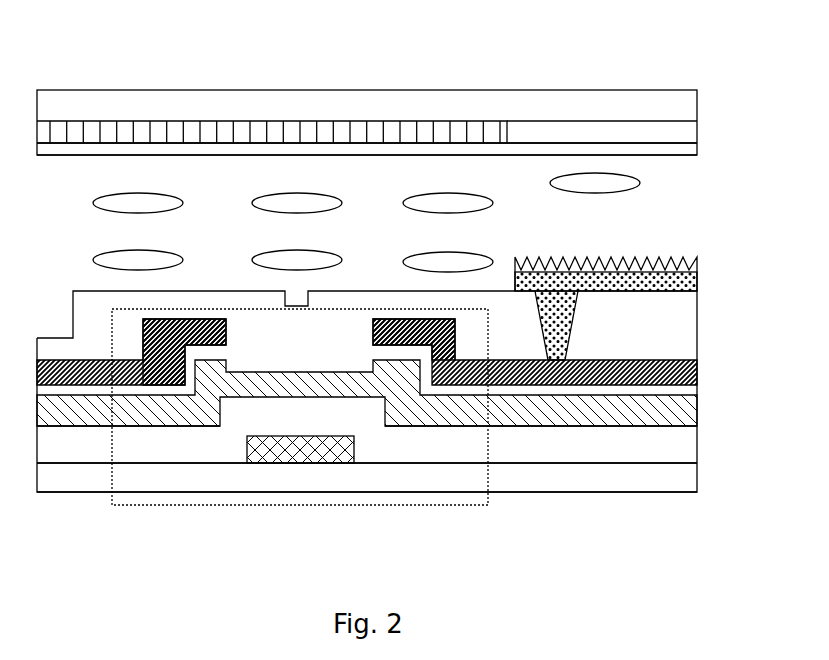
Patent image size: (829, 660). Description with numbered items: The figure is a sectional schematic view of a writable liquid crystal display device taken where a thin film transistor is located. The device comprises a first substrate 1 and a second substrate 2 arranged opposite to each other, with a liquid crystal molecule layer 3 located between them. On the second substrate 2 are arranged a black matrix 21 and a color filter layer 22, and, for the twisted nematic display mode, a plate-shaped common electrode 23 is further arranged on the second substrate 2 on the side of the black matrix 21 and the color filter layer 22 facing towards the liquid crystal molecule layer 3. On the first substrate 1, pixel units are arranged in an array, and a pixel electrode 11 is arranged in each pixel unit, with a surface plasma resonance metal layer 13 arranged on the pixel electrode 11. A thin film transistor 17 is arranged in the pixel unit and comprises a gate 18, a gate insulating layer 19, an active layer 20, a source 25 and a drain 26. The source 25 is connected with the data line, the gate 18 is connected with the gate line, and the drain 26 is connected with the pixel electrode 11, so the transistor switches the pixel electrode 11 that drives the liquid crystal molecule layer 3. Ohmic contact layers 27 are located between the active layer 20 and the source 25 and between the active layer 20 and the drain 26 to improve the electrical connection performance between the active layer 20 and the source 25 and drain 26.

The first substrate 1 is at (565, 480).
The second substrate 2 is at (235, 110).
The liquid crystal molecule layer 3 is at (167, 259).
The pixel electrode 11 is at (624, 285).
The surface plasma resonance metal layer 13 is at (560, 265).
The thin film transistor 17 is at (400, 505).
The gate 18 is at (357, 451).
The gate insulating layer 19 is at (367, 444).
The active layer 20 is at (298, 393).
The black matrix 21 is at (333, 132).
The color filter layer 22 is at (570, 133).
The common electrode 23 is at (417, 147).
The source 25 is at (103, 360).
The drain 26 is at (497, 373).
The Ohmic contact layers 27 is at (227, 344).